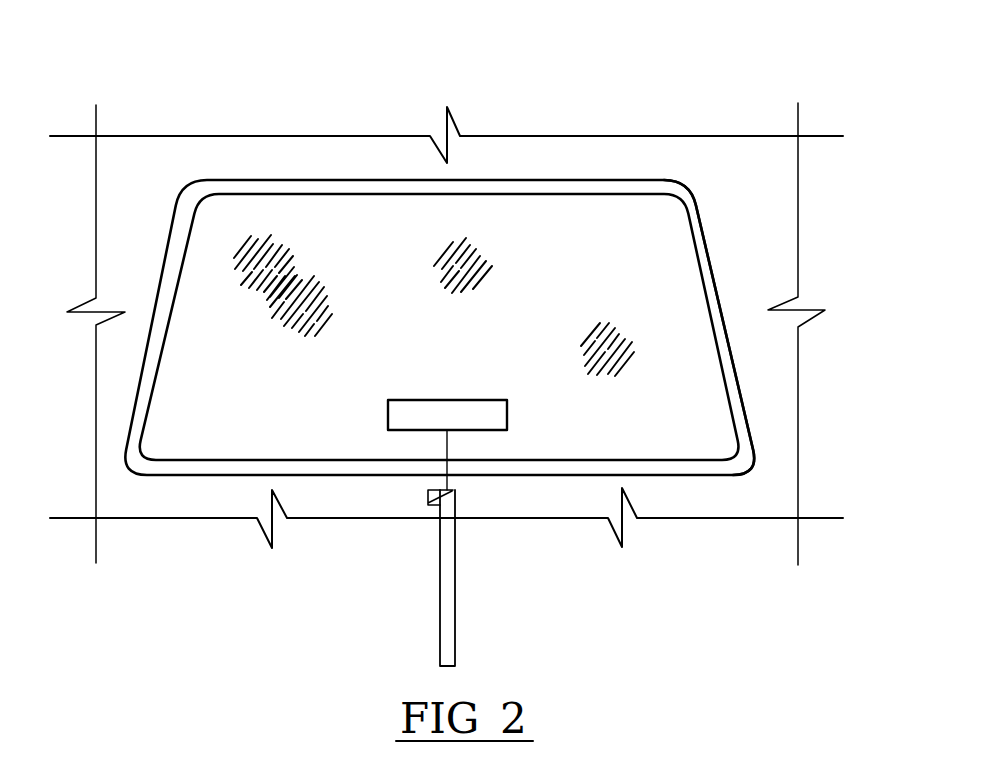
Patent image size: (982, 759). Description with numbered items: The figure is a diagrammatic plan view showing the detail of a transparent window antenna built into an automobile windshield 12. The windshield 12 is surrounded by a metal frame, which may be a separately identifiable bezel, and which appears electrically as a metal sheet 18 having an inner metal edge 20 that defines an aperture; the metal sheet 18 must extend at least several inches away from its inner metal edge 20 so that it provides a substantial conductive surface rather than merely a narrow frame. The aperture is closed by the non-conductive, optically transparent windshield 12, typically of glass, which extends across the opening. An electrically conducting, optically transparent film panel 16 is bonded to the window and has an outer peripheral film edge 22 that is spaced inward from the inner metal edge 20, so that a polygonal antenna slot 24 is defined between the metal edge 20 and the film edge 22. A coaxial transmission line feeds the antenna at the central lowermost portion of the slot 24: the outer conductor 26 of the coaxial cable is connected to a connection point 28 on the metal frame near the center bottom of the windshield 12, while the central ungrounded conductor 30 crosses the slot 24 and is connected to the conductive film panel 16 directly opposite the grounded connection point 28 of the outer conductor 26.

The windshield 12 is at (390, 247).
The film panel 16 is at (663, 268).
The metal sheet 18 is at (685, 153).
The inner metal edge 20 is at (533, 177).
The outer peripheral film edge 22 is at (705, 302).
The polygonal antenna slot 24 is at (303, 187).
The outer conductor 26 is at (437, 587).
The connection point 28 is at (455, 491).
The central ungrounded conductor 30 is at (447, 466).